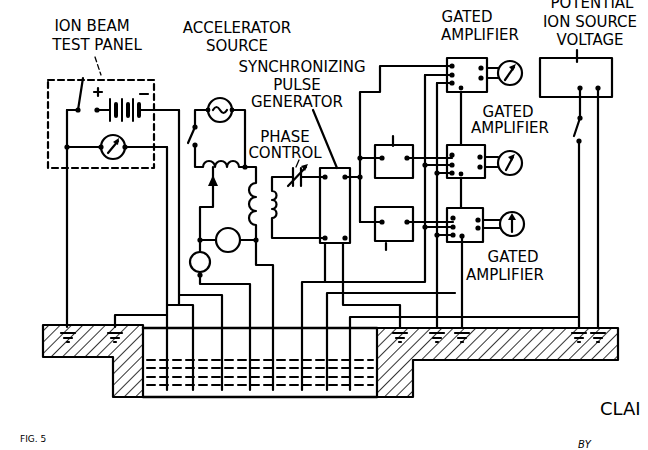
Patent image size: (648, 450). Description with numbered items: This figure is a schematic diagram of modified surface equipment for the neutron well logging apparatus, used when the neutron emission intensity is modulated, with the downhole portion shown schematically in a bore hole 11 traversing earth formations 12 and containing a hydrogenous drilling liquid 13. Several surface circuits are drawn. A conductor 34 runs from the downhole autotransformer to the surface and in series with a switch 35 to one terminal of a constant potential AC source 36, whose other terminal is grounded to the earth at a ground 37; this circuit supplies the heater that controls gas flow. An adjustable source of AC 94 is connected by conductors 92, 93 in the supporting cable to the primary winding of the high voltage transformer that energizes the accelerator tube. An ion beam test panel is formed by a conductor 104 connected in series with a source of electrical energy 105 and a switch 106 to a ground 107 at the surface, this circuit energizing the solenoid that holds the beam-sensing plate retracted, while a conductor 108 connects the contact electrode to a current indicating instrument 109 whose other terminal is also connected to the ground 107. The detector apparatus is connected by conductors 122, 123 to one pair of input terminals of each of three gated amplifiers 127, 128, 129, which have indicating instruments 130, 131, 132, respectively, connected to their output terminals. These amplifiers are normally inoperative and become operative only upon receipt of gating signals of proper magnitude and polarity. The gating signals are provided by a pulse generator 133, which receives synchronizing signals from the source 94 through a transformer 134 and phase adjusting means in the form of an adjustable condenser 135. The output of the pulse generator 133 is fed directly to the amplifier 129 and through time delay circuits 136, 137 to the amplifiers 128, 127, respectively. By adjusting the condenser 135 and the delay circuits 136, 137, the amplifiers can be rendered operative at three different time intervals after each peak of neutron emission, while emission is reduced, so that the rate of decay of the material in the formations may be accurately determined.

The bore hole 11 is at (374, 398).
The earth formations 12 is at (414, 393).
The hydrogenous drilling liquid 13 is at (313, 397).
The conductor 34 is at (584, 172).
The switch 35 is at (587, 125).
The constant potential AC source 36 is at (567, 87).
The ground 37 is at (604, 326).
The conductor 92 is at (220, 313).
The conductor 93 is at (275, 270).
The adjustable source of AC 94 is at (195, 100).
The conductor 104 is at (168, 146).
The source of electrical energy 105 is at (128, 99).
The switch 106 is at (78, 84).
The ground 107 is at (84, 322).
The conductor 108 is at (166, 238).
The current indicating instrument 109 is at (116, 160).
The conductor 122 is at (425, 282).
The conductor 123 is at (455, 293).
The gated amplifier 127 is at (484, 206).
The gated amplifier 128 is at (485, 148).
The gated amplifier 129 is at (447, 60).
The indicating instrument 130 is at (520, 217).
The indicating instrument 131 is at (521, 170).
The indicating instrument 132 is at (507, 83).
The pulse generator 133 is at (327, 210).
The transformer 134 is at (263, 222).
The adjustable condenser 135 is at (298, 188).
The time delay circuit 136 is at (383, 178).
The time delay circuit 137 is at (402, 200).